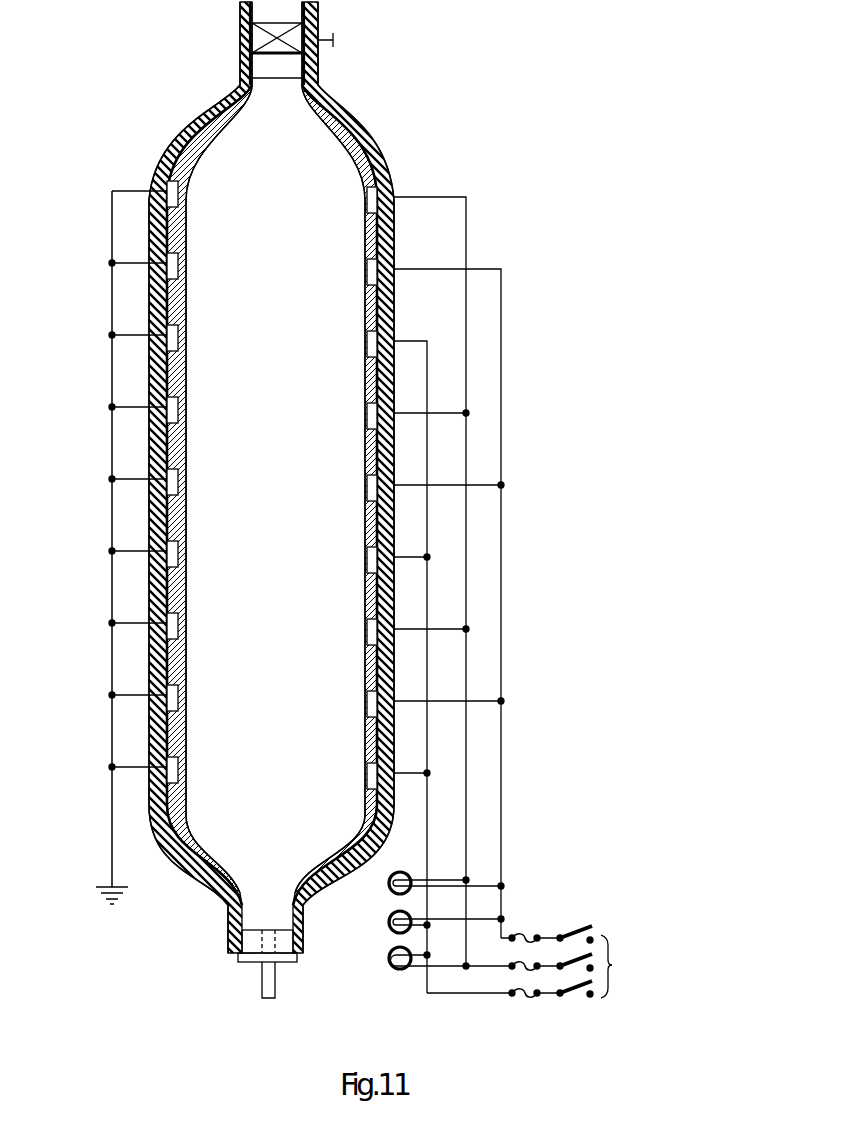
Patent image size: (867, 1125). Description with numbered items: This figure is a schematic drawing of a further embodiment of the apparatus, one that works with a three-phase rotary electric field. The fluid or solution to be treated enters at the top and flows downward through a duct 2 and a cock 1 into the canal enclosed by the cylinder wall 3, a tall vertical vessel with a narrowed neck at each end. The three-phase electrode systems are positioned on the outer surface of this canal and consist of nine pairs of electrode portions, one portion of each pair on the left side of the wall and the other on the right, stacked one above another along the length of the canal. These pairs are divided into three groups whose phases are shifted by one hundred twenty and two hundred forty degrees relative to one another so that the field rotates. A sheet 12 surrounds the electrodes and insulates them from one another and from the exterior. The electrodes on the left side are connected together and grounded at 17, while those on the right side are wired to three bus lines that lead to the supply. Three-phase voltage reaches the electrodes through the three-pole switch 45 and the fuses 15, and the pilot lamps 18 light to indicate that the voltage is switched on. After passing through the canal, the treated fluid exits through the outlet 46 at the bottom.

The cock 1 is at (258, 43).
The duct 2 is at (266, 13).
The cylinder wall 3 is at (190, 117).
The sheet 12 is at (358, 111).
The fuses 15 is at (514, 935).
The ground 17 is at (100, 900).
The pilot lamps 18 is at (388, 953).
The three-pole switch 45 is at (576, 925).
The outlet 46 is at (264, 985).